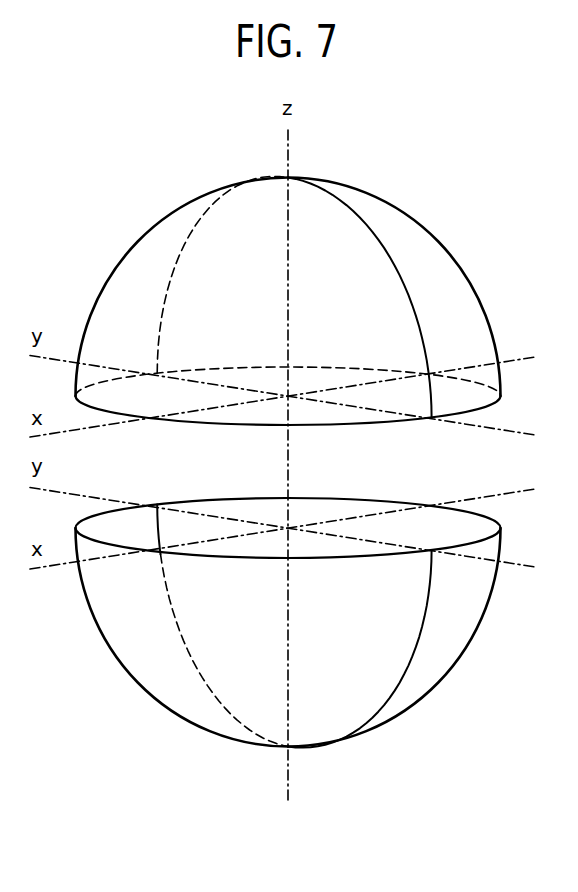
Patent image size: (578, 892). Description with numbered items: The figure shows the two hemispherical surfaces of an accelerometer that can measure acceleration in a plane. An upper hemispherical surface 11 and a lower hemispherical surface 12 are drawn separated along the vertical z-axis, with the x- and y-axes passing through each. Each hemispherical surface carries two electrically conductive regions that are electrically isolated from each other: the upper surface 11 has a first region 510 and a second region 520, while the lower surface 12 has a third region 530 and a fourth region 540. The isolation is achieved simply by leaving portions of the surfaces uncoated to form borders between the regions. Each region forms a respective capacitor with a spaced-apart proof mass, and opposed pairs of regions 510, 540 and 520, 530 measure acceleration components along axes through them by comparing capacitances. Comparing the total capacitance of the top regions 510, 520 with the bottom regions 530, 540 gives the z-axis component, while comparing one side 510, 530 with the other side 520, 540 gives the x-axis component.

The hemispherical surface 11 is at (285, 272).
The hemispherical surface 12 is at (289, 654).
The electrically conductive region 510 is at (112, 275).
The electrically conductive region 520 is at (483, 310).
The electrically conductive region 530 is at (121, 662).
The electrically conductive region 540 is at (475, 636).